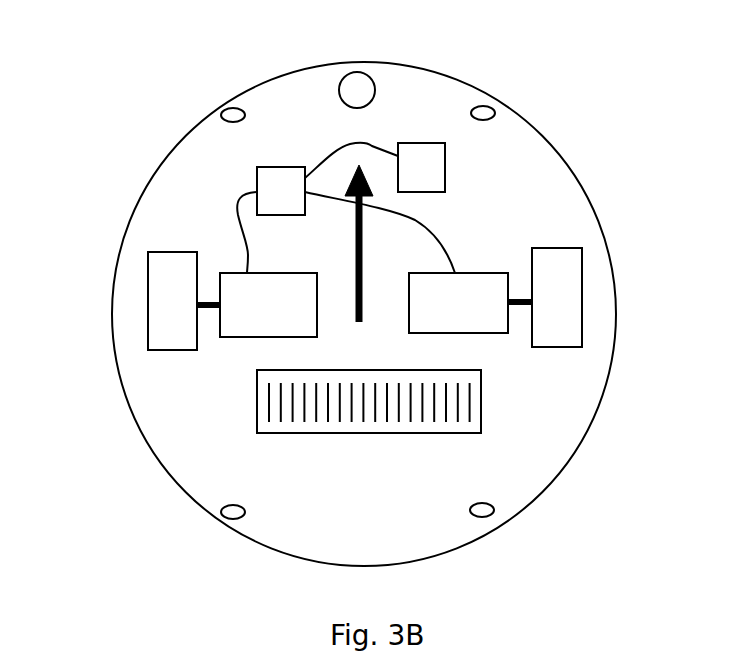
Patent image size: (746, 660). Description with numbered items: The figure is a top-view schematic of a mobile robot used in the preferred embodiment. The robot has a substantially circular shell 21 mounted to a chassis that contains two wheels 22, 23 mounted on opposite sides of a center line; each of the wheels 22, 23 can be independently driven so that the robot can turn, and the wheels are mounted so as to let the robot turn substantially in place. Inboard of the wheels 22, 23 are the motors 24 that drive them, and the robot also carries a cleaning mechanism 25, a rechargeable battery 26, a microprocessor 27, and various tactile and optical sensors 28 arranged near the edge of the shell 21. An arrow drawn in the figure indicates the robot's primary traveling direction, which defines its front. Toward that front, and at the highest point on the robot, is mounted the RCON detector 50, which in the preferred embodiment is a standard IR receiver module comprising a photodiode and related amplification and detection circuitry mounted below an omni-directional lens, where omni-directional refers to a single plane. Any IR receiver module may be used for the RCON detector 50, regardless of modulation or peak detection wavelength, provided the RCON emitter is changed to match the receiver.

The substantially circular shell 21 is at (113, 312).
The wheel 22 is at (567, 308).
The wheel 23 is at (173, 337).
The motors 24 is at (257, 322).
The cleaning mechanism 25 is at (378, 422).
The rechargeable battery 26 is at (277, 177).
The microprocessor 27 is at (430, 165).
The tactile and optical sensors 28 is at (228, 107).
The RCON detector 50 is at (356, 84).